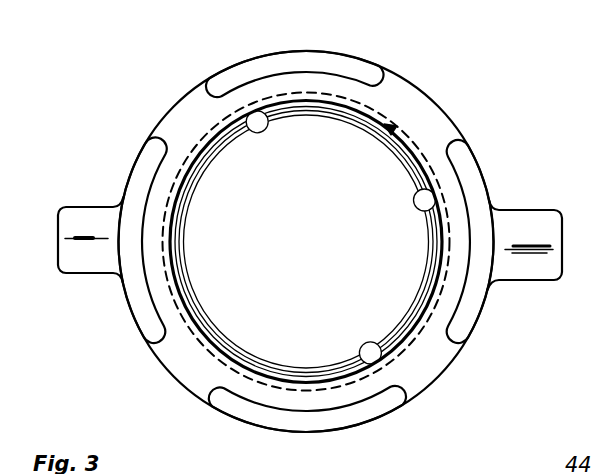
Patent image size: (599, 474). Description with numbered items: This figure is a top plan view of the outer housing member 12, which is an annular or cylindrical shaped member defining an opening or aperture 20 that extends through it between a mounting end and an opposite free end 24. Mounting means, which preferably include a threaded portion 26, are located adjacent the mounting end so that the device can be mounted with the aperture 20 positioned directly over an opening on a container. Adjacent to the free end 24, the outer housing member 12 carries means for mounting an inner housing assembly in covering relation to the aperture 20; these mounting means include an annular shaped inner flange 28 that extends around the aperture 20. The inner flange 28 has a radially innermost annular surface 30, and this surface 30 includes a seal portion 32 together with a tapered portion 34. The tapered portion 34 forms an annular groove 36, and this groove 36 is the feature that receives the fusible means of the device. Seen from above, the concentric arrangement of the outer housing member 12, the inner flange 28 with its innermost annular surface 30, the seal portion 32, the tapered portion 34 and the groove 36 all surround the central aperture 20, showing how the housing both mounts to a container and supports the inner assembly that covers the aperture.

The outer housing member 12 is at (467, 341).
The aperture 20 is at (416, 195).
The free end 24 is at (186, 128).
The threaded portion 26 is at (178, 311).
The inner flange 28 is at (186, 355).
The radially innermost annular surface 30 is at (246, 118).
The seal portion 32 is at (379, 350).
The tapered portion 34 is at (361, 116).
The annular groove 36 is at (396, 130).